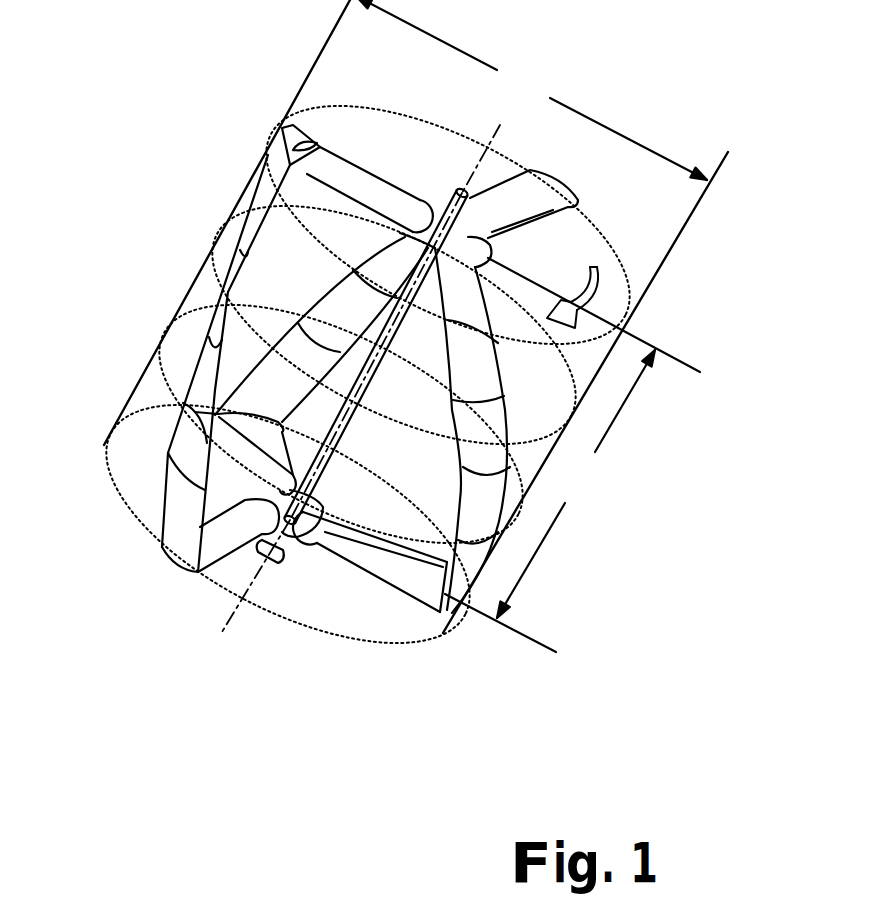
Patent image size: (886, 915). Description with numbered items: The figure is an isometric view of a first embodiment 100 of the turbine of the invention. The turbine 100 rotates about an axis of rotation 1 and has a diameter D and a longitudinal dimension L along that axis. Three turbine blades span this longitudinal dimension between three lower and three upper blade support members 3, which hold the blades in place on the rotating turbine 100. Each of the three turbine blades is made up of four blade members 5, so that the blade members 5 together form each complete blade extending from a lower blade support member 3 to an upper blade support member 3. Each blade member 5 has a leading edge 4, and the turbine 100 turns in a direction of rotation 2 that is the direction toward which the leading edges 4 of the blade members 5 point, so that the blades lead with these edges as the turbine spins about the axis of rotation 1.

The first embodiment 100 is at (588, 62).
The axis of rotation 1 is at (222, 632).
The direction of rotation 2 is at (559, 301).
The blade support member 3 is at (345, 189).
The leading edge 4 is at (163, 488).
The blade member 5 is at (172, 495).